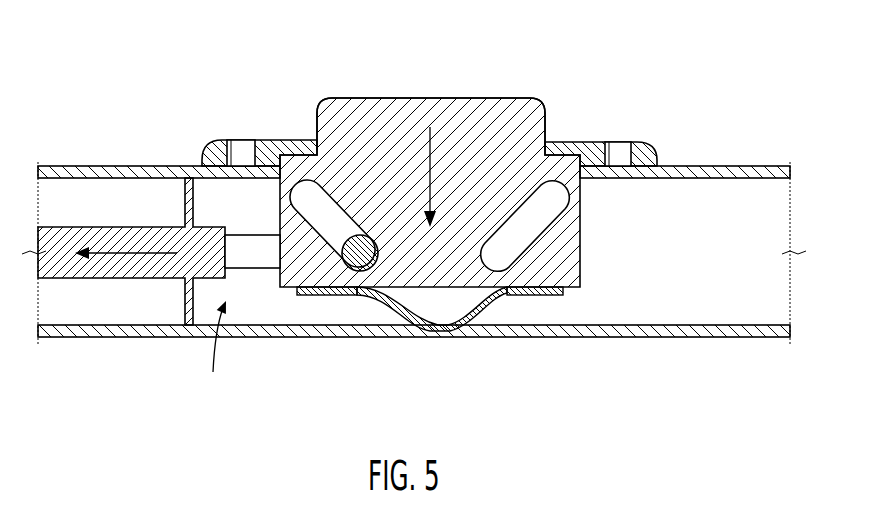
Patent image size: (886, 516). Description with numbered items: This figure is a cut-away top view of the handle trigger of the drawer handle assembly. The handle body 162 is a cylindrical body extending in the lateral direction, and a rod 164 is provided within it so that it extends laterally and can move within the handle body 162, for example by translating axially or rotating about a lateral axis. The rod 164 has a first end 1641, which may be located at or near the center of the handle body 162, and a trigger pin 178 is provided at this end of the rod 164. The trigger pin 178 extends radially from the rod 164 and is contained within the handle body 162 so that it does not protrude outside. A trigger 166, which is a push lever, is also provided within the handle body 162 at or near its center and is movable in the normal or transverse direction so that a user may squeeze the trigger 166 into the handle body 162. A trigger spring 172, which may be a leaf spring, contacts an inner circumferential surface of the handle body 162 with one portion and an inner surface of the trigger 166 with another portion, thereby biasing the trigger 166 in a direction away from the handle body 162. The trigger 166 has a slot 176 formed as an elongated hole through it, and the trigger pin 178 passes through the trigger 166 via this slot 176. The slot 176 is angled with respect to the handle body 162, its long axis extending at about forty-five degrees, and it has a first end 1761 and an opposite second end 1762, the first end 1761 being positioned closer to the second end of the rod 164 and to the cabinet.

The handle body 162 is at (668, 218).
The rod 164 is at (167, 267).
The first end 1641 is at (212, 352).
The trigger 166 is at (490, 137).
The trigger spring 172 is at (397, 315).
The slot 176 is at (335, 215).
The first end 1761 is at (294, 178).
The second end 1762 is at (385, 265).
The trigger pin 178 is at (358, 258).